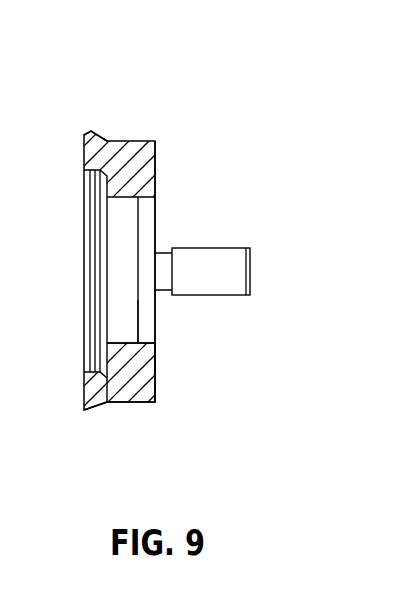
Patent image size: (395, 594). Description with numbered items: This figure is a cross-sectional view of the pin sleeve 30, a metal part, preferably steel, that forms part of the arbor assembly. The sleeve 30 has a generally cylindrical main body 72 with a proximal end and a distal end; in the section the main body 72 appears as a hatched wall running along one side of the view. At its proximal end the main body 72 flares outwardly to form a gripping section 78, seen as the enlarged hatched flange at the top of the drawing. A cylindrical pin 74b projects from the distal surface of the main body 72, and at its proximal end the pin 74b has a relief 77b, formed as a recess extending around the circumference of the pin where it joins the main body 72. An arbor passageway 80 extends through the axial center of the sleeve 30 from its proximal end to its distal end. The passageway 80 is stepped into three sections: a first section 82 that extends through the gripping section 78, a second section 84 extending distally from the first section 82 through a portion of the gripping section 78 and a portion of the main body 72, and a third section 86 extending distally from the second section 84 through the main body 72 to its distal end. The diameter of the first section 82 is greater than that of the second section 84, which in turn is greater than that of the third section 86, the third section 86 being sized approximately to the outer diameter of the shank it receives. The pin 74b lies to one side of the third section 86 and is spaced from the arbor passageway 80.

The sleeve 30 is at (214, 172).
The main body 72 is at (127, 141).
The cylindrical pin 74b is at (228, 283).
The relief 77b is at (163, 248).
The gripping section 78 is at (87, 131).
The arbor passageway 80 is at (91, 311).
The first section 82 is at (92, 378).
The second section 84 is at (148, 349).
The third section 86 is at (135, 365).